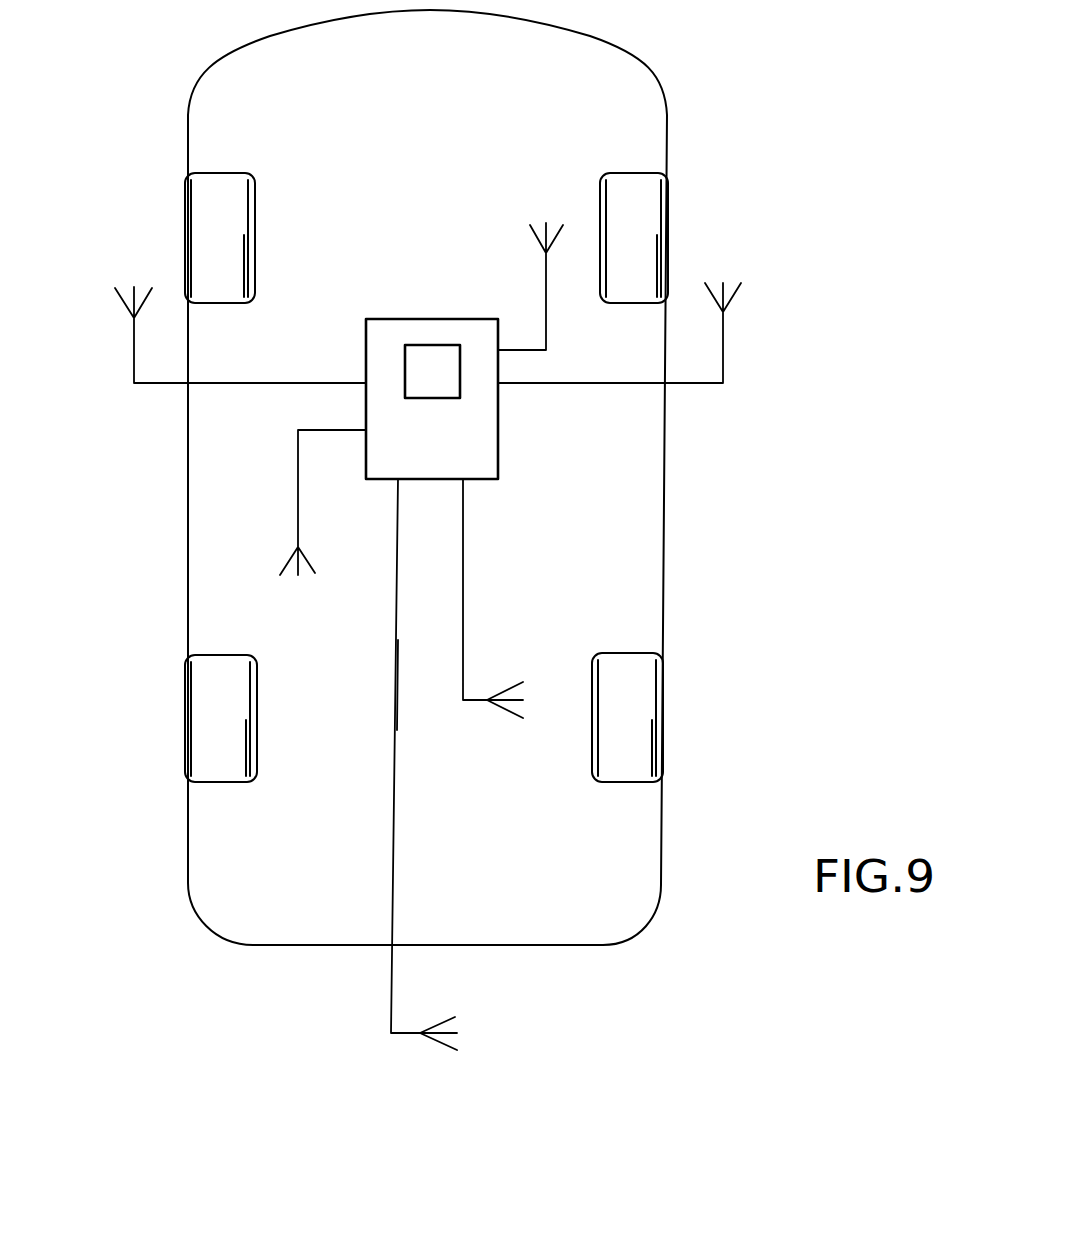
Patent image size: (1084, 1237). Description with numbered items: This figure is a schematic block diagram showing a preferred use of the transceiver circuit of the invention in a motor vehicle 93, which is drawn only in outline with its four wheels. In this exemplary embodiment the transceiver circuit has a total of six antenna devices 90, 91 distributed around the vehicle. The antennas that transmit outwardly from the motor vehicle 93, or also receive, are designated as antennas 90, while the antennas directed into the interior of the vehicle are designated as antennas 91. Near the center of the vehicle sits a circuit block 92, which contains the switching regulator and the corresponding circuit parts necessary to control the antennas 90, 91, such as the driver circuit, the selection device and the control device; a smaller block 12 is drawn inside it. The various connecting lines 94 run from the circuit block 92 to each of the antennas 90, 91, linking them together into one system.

The controller 12 is at (426, 342).
The antenna devices 90 is at (113, 306).
The antenna devices 91 is at (532, 240).
The circuit block 92 is at (500, 442).
The motor vehicle 93 is at (668, 523).
The connecting lines 94 is at (455, 687).